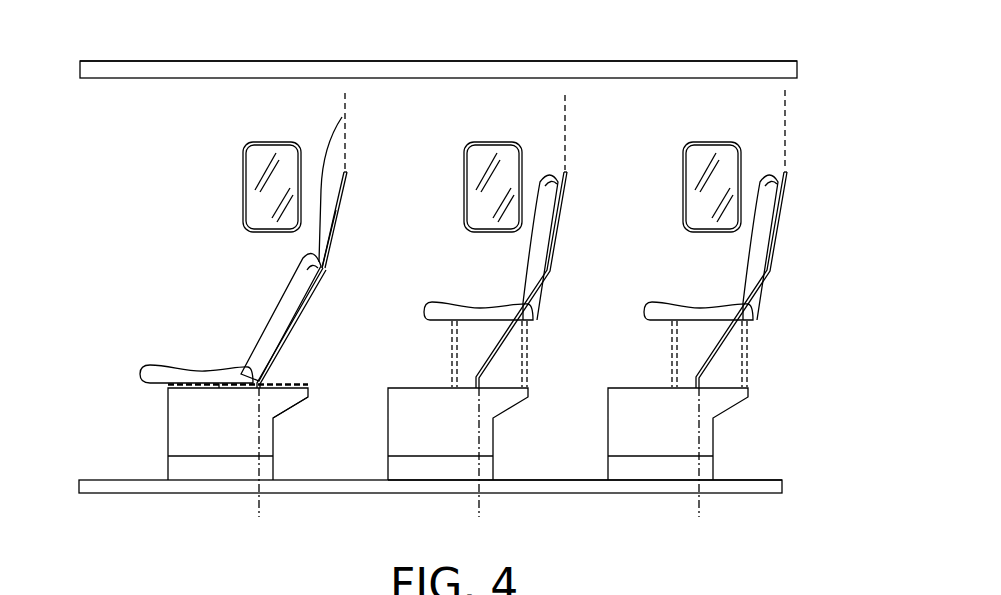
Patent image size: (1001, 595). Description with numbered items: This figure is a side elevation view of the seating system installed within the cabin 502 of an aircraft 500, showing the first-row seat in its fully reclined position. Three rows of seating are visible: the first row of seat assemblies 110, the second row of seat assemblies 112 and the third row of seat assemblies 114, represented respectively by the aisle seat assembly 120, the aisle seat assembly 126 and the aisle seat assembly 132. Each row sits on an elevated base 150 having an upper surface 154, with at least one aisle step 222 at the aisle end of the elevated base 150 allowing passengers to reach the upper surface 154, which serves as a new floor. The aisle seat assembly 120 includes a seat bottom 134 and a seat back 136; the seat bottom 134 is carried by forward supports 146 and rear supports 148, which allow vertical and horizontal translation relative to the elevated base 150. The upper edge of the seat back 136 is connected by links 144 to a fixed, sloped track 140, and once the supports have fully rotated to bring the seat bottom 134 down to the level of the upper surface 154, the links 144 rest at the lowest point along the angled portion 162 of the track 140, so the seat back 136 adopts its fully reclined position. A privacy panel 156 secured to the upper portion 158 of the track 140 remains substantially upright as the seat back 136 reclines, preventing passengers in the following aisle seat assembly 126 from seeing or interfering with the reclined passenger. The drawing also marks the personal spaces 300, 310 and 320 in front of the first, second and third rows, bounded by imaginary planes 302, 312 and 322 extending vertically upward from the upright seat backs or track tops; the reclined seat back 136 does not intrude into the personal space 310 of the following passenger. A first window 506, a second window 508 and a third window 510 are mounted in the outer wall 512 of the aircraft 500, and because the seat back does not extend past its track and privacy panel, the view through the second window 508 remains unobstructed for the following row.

The aircraft 500 is at (108, 61).
The cabin 502 is at (92, 142).
The outer wall 512 is at (160, 113).
The first window 506 is at (272, 142).
The second window 508 is at (492, 142).
The third window 510 is at (712, 142).
The personal space 300 is at (207, 230).
The personal space 310 is at (427, 230).
The personal space 320 is at (639, 230).
The imaginary plane 302 is at (345, 99).
The imaginary plane 312 is at (564, 99).
The imaginary plane 322 is at (784, 99).
The first row of seat assemblies 110 is at (168, 500).
The second row of seat assemblies 112 is at (435, 500).
The third row of seat assemblies 114 is at (660, 500).
The aisle seat assembly 120 is at (251, 326).
The aisle seat assembly 126 is at (499, 294).
The aisle seat assembly 132 is at (713, 291).
The seat bottom 134 is at (160, 365).
The seat back 136 is at (263, 322).
The inboard track 140 is at (337, 253).
The link 144 is at (343, 119).
The inboard forward support 146 is at (190, 386).
The inboard rear support 148 is at (285, 398).
The elevated base 150 is at (168, 414).
The upper surface 154 is at (219, 388).
The privacy panel 156 is at (347, 173).
The upper portion 158 is at (341, 210).
The angled portion 162 is at (312, 300).
The aisle step 222 is at (205, 456).